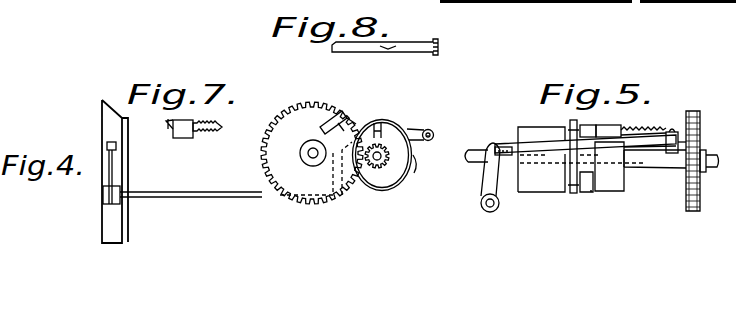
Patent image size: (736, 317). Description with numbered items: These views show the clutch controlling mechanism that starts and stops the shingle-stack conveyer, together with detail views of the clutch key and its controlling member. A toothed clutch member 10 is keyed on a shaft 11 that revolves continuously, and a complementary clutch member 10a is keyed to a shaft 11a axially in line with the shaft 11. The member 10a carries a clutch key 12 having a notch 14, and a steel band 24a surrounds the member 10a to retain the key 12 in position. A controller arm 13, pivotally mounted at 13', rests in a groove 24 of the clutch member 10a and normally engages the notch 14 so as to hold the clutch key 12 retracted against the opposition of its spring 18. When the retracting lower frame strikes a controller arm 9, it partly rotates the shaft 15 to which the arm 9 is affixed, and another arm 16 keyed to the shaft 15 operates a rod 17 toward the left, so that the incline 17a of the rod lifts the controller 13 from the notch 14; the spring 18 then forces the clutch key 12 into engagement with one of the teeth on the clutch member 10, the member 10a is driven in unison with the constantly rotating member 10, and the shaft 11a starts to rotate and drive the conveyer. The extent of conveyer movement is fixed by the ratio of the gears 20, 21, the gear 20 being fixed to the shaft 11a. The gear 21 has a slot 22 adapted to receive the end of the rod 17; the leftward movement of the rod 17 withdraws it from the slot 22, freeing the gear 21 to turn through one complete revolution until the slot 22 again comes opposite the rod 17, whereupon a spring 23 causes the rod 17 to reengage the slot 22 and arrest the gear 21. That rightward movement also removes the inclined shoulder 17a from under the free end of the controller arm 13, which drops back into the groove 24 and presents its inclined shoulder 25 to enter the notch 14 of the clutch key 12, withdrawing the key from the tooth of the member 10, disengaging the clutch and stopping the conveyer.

In FIG. 5, the controller arm 9 is at (489, 182).
In FIG. 5, the clutch member 10 is at (537, 193).
In FIG. 5, the complementary clutch member 10a is at (611, 188).
In FIG. 5, the shaft 11 is at (478, 156).
In FIG. 7, the shaft 11a is at (313, 150).
In FIG. 5, the shaft 11a is at (671, 169).
In FIG. 7, the clutch key 12 is at (183, 140).
In FIG. 7, the controller arm 13 is at (394, 113).
In FIG. 8, the controller arm 13 is at (385, 59).
In FIG. 5, the controller arm 13 is at (585, 127).
In FIG. 7, the pivot 13' is at (450, 119).
In FIG. 7, the notch 14 is at (173, 133).
In FIG. 4, the shaft 15 is at (195, 202).
In FIG. 5, the shaft 15 is at (488, 207).
In FIG. 7, the arm 16 is at (337, 197).
In FIG. 5, the arm 16 is at (493, 146).
In FIG. 5, the rod 17 is at (680, 127).
In FIG. 5, the incline 17a is at (608, 128).
In FIG. 7, the spring 18 is at (212, 133).
In FIG. 7, the gear 20 is at (382, 162).
In FIG. 7, the gear 21 is at (301, 106).
In FIG. 5, the gear 21 is at (701, 124).
In FIG. 7, the slot 22 is at (340, 118).
In FIG. 5, the slot 22 is at (697, 141).
In FIG. 5, the spring 23 is at (648, 131).
In FIG. 5, the groove 24 is at (572, 194).
In FIG. 7, the steel band 24a is at (385, 192).
In FIG. 5, the steel band 24a is at (592, 191).
In FIG. 8, the inclined shoulder 25 is at (396, 45).